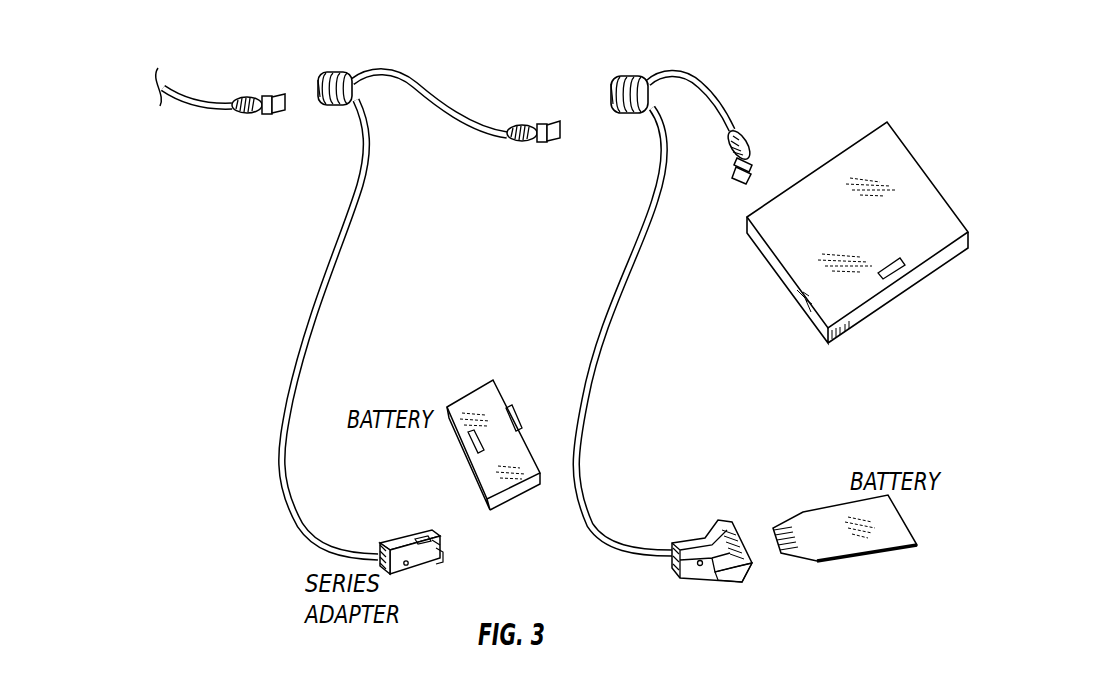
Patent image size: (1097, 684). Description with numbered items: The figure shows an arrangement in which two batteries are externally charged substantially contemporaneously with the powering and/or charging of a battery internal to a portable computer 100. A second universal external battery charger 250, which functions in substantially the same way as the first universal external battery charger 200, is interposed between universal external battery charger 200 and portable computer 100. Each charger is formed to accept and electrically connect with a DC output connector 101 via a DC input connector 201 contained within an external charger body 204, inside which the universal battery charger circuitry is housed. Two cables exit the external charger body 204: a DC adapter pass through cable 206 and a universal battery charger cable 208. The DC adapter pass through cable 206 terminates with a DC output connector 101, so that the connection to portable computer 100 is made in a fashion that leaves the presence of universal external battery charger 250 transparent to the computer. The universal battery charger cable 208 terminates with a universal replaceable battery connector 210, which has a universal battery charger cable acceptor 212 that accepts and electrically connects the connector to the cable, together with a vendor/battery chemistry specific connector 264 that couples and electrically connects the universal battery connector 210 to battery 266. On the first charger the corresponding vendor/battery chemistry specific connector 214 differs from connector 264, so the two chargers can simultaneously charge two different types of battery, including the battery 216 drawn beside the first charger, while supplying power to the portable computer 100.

The portable computer 100 is at (908, 135).
The DC output connector 101 is at (267, 97).
The universal external battery charger 200 is at (258, 234).
The DC input connector 201 is at (323, 77).
The external charger body 204 is at (342, 72).
The DC adapter pass through cable 206 is at (387, 72).
The universal battery charger cable 208 is at (628, 260).
The universal replaceable battery connector 210 is at (398, 535).
The universal battery charger cable acceptor 212 is at (380, 543).
The vendor/battery chemistry specific connector 214 is at (438, 552).
The battery 216 is at (473, 390).
The universal external battery charger 250 is at (787, 54).
The vendor/battery chemistry specific connector 264 is at (752, 568).
The battery 266 is at (843, 560).